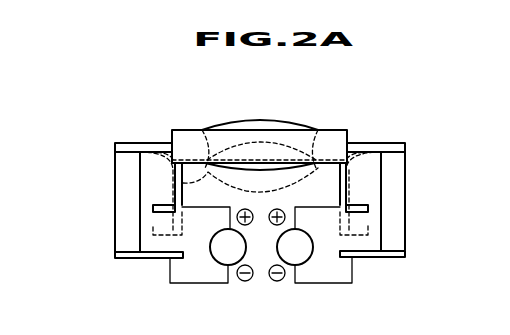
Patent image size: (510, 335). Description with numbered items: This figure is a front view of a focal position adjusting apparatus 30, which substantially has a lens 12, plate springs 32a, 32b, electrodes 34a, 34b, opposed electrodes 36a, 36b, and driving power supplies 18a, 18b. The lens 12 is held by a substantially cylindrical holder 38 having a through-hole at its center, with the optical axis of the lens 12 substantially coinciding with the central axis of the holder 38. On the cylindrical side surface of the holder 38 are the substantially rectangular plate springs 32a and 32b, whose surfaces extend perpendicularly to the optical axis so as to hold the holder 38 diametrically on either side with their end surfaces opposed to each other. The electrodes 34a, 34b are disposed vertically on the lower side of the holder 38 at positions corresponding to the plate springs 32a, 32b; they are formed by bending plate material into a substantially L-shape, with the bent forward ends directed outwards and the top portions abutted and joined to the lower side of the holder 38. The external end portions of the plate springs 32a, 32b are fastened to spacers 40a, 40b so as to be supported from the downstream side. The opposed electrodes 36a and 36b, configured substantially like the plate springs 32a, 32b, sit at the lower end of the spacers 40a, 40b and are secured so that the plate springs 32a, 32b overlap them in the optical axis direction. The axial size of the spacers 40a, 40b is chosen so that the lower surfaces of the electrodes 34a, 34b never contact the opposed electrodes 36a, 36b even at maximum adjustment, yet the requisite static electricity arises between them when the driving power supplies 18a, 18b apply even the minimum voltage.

The adjusting apparatus 30 is at (451, 120).
The lens 12 is at (273, 121).
The holder 38 is at (185, 132).
The plate spring 32a is at (123, 145).
The plate spring 32b is at (393, 143).
The electrode 34a is at (178, 196).
The electrode 34b is at (347, 186).
The spacer 40a is at (115, 240).
The spacer 40b is at (405, 222).
The opposed electrode 36a is at (150, 259).
The opposed electrode 36b is at (370, 258).
The driving power supply 18a is at (211, 254).
The driving power supply 18b is at (310, 259).